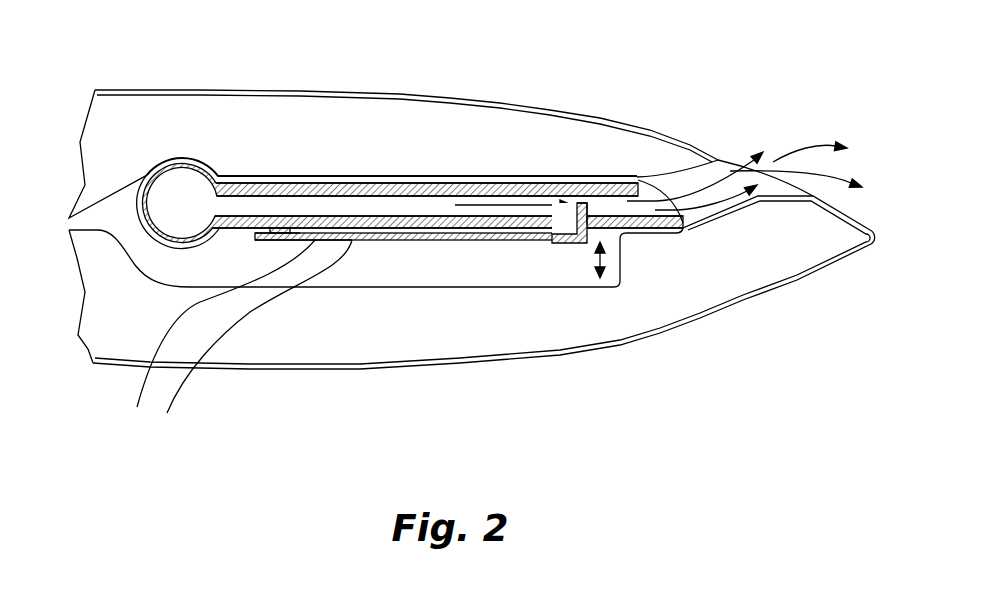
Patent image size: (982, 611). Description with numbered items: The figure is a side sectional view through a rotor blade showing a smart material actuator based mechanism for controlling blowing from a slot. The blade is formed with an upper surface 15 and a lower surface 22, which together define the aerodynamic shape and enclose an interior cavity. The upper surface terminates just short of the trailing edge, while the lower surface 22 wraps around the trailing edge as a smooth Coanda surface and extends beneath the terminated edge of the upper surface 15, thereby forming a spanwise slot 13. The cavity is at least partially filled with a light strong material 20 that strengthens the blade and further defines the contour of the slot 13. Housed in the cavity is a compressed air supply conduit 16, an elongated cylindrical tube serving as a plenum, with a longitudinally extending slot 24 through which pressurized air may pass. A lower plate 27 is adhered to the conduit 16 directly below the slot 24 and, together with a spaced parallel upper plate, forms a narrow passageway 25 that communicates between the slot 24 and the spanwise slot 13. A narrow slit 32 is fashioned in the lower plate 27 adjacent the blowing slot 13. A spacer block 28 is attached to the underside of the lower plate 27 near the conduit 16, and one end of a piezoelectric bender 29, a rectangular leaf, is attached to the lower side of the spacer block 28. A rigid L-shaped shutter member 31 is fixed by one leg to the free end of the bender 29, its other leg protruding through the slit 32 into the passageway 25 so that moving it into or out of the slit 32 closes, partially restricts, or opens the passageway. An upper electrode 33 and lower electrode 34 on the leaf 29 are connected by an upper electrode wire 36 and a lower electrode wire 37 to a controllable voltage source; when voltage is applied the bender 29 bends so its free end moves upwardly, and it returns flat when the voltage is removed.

The spanwise slot 13 is at (722, 160).
The upper surface 15 is at (348, 90).
The compressed air supply conduit 16 is at (188, 164).
The light strong material 20 is at (476, 118).
The lower surface 22 is at (388, 370).
The longitudinally extending slot 24 is at (210, 222).
The narrow passageway 25 is at (402, 197).
The lower plate 27 is at (388, 218).
The spacer block 28 is at (258, 233).
The piezoelectric bender 29 is at (488, 237).
The L-shaped shutter member 31 is at (567, 243).
The narrow slit 32 is at (577, 222).
The upper electrode 33 is at (307, 233).
The lower electrode 34 is at (315, 240).
The upper electrode wire 36 is at (218, 337).
The lower electrode wire 37 is at (140, 392).